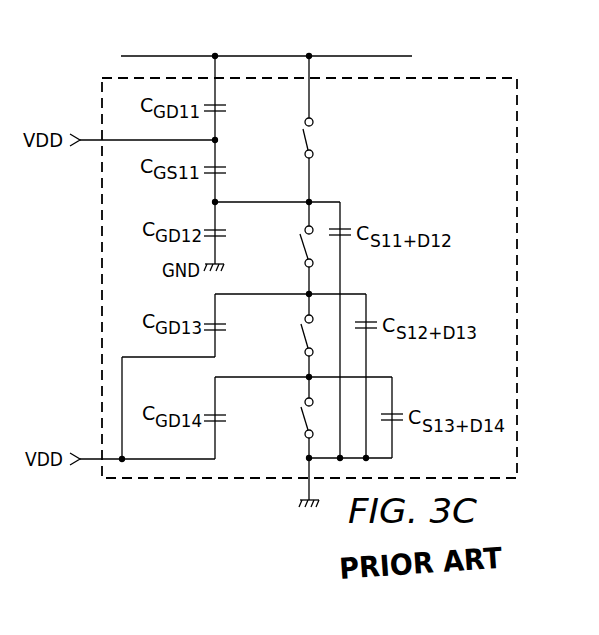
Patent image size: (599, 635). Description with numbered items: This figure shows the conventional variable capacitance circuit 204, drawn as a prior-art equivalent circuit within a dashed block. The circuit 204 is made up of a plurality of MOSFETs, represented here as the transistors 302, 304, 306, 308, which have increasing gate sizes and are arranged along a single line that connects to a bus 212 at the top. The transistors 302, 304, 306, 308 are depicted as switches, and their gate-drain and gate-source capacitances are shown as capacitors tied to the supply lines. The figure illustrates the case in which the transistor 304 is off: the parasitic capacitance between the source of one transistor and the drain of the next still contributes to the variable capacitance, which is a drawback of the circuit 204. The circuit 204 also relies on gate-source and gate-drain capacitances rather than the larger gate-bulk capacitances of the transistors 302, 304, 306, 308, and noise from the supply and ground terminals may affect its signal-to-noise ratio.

The bus line 212 is at (307, 54).
The variable capacitance circuit 204 is at (458, 131).
The transistor 302 is at (304, 141).
The transistor 304 is at (302, 250).
The transistor 306 is at (302, 334).
The transistor 308 is at (302, 417).